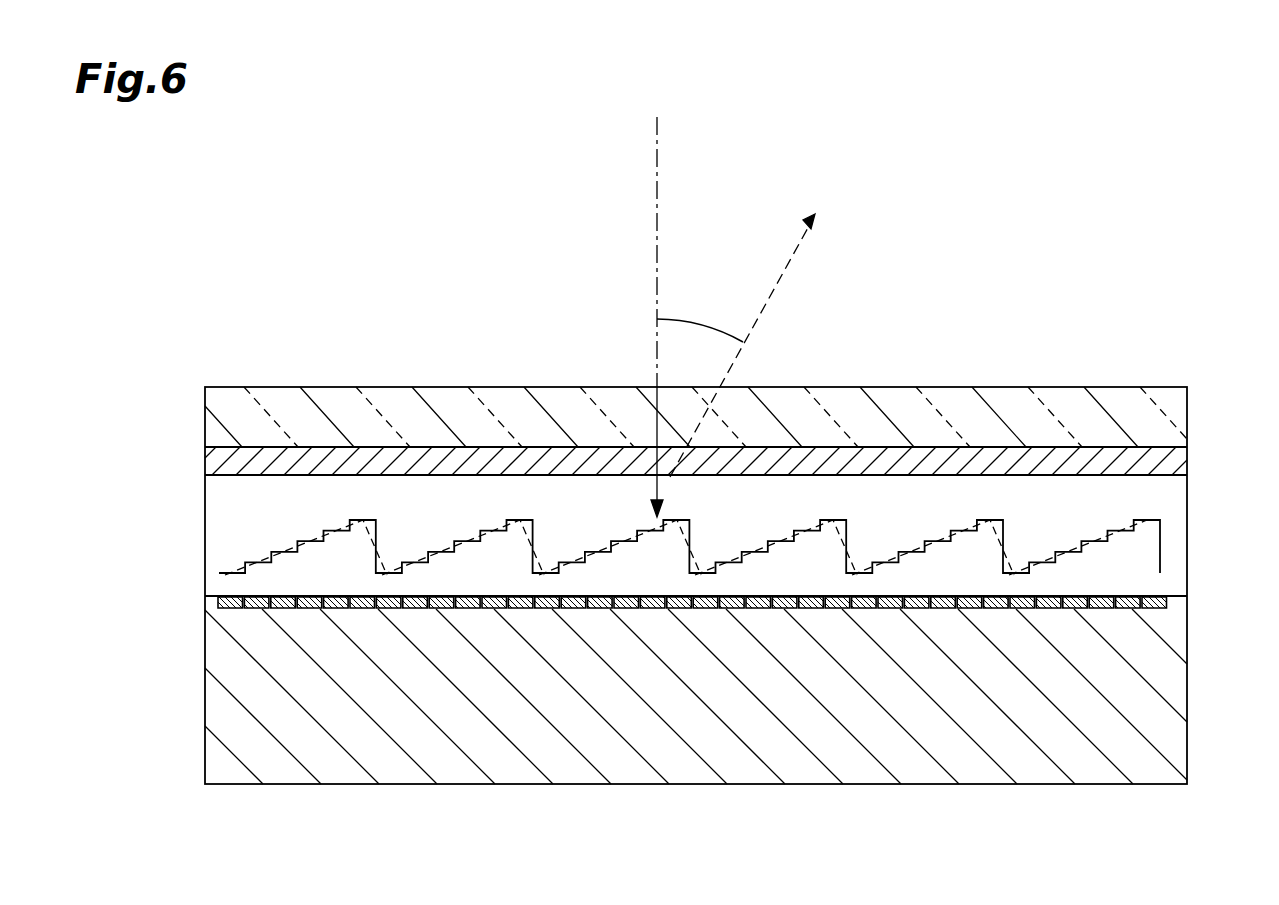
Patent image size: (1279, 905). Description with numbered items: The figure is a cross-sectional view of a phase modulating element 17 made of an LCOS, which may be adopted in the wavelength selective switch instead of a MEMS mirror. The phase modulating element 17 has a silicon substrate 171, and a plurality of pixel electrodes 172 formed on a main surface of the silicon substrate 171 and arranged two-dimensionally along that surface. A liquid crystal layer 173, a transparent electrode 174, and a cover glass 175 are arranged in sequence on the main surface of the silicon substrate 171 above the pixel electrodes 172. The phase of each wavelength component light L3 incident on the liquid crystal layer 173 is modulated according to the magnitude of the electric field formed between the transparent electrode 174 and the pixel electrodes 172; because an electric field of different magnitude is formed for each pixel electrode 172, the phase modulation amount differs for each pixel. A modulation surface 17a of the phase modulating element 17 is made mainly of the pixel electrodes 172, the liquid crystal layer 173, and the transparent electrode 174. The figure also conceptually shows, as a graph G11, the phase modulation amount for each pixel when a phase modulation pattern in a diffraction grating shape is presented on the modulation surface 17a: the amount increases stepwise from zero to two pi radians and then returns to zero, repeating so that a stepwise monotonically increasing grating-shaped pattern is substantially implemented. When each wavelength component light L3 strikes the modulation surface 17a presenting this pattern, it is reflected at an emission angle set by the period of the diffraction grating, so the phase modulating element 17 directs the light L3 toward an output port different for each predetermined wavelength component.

The phase modulating element 17 is at (1103, 211).
The modulation surface 17a is at (197, 448).
The silicon substrate 171 is at (1174, 719).
The pixel electrodes 172 is at (1103, 604).
The liquid crystal layer 173 is at (1174, 523).
The transparent electrode 174 is at (1174, 469).
The cover glass 175 is at (1174, 406).
The graph G11 is at (993, 518).
The wavelength component light L3 is at (658, 137).